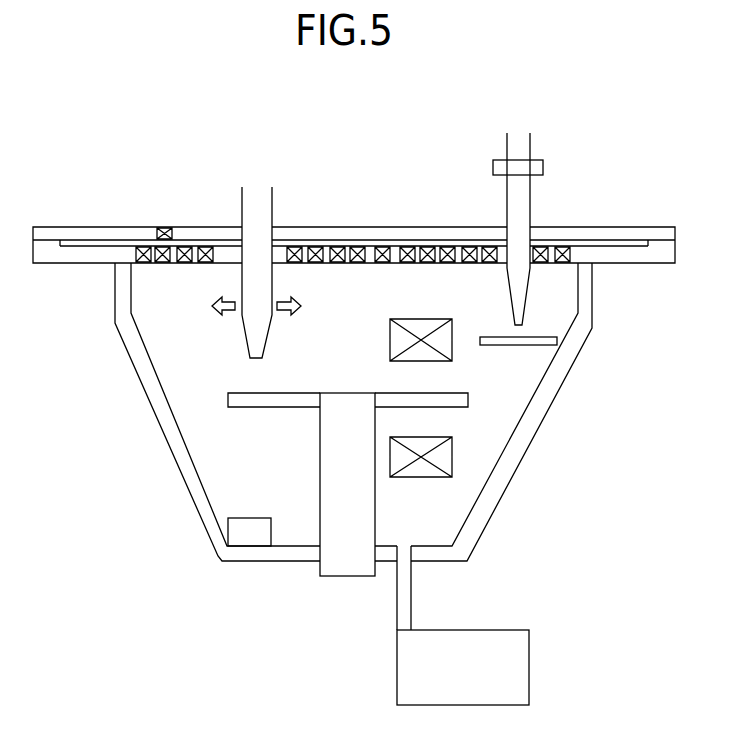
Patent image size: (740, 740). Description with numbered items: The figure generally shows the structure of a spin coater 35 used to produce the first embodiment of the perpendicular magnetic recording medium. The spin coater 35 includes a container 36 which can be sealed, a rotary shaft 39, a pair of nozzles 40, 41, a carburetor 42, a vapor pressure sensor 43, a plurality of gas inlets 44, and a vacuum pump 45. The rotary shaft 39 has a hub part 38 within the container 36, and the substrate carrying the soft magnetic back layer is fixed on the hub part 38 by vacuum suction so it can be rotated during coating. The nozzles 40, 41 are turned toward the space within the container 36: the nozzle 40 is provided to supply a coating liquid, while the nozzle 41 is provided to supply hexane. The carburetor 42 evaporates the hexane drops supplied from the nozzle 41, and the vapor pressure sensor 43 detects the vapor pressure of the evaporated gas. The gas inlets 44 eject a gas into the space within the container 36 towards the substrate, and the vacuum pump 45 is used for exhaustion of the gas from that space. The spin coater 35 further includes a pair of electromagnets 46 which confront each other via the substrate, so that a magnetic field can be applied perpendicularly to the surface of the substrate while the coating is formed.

The spin coater 35 is at (130, 130).
The container 36 is at (185, 434).
The hub part 38 is at (348, 392).
The rotary shaft 39 is at (348, 566).
The nozzle 40 is at (250, 217).
The nozzle 41 is at (522, 210).
The carburetor 42 is at (520, 346).
The vapor pressure sensor 43 is at (249, 532).
The gas inlets 44 is at (166, 264).
The vacuum pump 45 is at (530, 664).
The electromagnets 46 is at (452, 348).